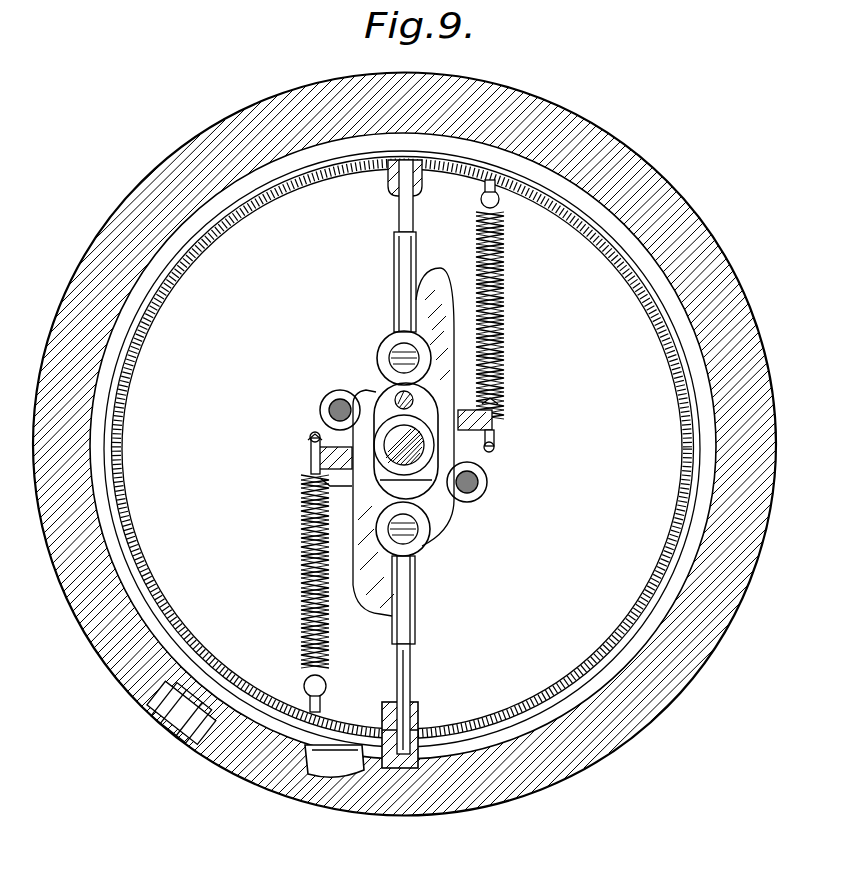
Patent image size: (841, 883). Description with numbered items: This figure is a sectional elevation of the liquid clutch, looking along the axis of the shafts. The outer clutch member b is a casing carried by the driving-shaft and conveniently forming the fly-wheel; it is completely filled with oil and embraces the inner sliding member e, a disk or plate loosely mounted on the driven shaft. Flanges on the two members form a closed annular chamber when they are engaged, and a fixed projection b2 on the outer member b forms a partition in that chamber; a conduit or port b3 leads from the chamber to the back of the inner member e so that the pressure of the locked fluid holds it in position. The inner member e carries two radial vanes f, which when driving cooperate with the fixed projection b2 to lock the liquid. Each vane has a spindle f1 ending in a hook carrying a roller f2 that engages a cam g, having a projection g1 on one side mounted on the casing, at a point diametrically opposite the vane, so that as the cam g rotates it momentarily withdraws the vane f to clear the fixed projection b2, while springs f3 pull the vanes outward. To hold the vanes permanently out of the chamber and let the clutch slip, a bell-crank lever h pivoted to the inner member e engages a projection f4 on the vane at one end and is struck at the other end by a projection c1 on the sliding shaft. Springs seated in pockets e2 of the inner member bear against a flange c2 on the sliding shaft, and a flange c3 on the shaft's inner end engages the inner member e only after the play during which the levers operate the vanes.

The outer clutch member b is at (212, 152).
The fixed projection b2 is at (399, 754).
The conduit or port b3 is at (332, 766).
The inner sliding member e is at (402, 449).
The pockets e2 is at (326, 398).
The radial vanes f is at (400, 205).
The spindle f1 is at (432, 300).
The roller f2 is at (385, 347).
The springs f3 is at (506, 307).
The projection on vane f4 is at (498, 444).
The cam g is at (470, 450).
The projection of cam g1 is at (388, 395).
The bell-crank lever h is at (494, 418).
The projection on sliding shaft c1 is at (307, 447).
The flange on sliding shaft c2 is at (503, 380).
The flange on inner end of sliding shaft c3 is at (330, 492).